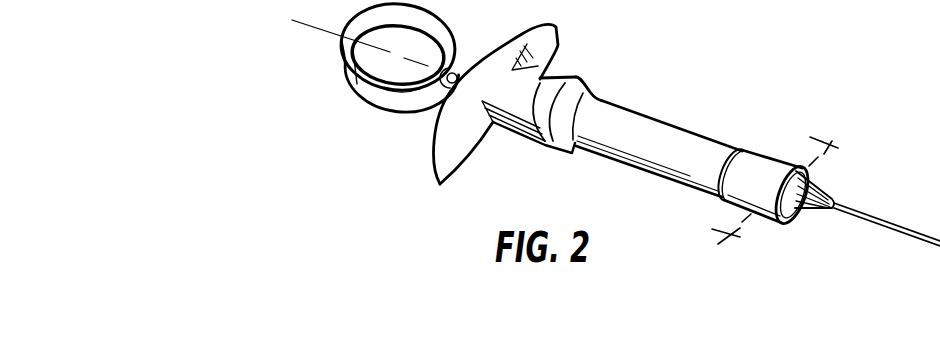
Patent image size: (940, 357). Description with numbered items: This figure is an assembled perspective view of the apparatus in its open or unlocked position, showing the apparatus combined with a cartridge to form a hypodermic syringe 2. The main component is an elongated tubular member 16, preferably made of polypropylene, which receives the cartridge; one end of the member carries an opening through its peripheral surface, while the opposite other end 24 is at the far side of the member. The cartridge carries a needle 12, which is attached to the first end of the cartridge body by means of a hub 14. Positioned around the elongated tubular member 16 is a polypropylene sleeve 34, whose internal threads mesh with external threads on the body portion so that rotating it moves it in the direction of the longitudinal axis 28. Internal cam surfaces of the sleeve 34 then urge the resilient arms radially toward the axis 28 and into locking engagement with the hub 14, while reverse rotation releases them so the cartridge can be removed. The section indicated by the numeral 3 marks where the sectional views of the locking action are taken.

The hypodermic syringe 2 is at (660, 68).
The axis 28 is at (325, 33).
The other end 24 is at (507, 125).
The elongated tubular member 16 is at (693, 108).
The sleeve 34 is at (764, 160).
The hub 14 is at (820, 193).
The needle 12 is at (893, 236).
The section line 3- 3 is at (824, 143).